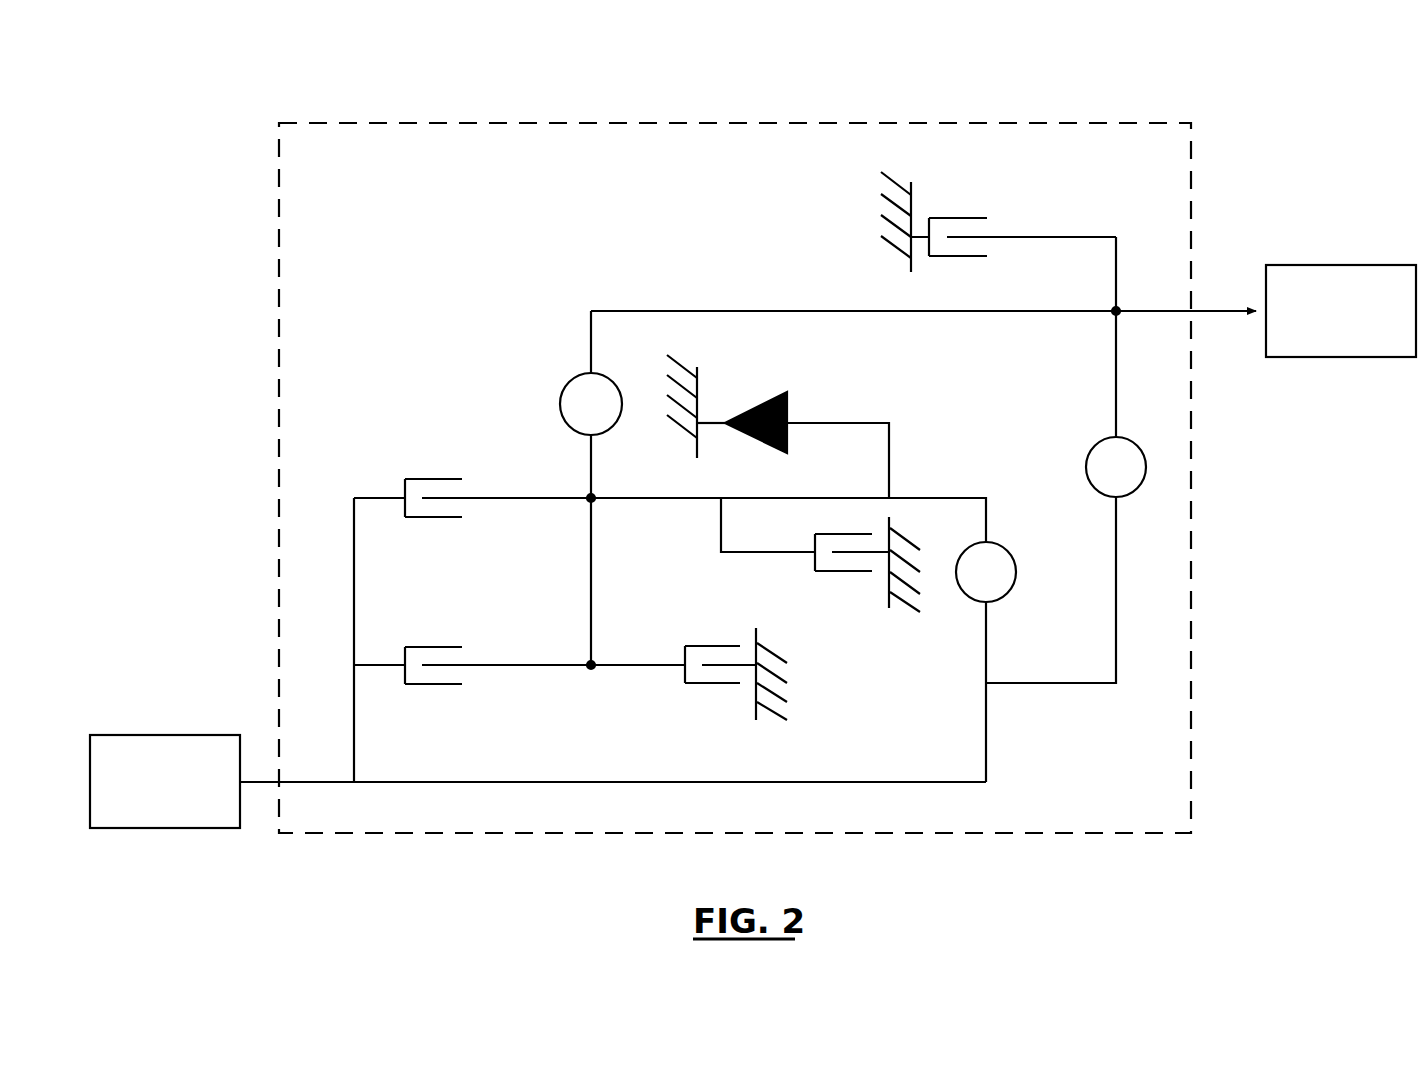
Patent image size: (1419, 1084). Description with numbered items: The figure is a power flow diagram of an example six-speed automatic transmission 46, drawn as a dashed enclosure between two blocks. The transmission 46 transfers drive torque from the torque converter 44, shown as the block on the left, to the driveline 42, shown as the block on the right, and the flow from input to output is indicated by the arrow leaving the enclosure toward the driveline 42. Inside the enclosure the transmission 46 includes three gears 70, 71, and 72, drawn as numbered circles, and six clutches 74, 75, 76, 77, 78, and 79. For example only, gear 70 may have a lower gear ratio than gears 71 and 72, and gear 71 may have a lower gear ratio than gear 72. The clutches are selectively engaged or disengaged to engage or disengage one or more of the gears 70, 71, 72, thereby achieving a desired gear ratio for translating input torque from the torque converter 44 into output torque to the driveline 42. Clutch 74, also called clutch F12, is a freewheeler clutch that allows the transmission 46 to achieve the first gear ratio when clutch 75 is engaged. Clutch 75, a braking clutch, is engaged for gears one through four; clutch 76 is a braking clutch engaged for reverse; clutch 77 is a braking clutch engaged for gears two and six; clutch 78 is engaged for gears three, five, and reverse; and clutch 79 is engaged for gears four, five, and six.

The driveline 42 is at (1340, 265).
The torque converter 44 is at (165, 735).
The transmission 46 is at (746, 121).
The gear 70 is at (1089, 451).
The gear 71 is at (1012, 555).
The gear 72 is at (562, 392).
The freewheeler clutch 74 is at (799, 402).
The clutch 75 is at (972, 200).
The clutch 76 is at (845, 585).
The clutch 77 is at (707, 704).
The clutch 78 is at (441, 631).
The clutch 79 is at (429, 464).